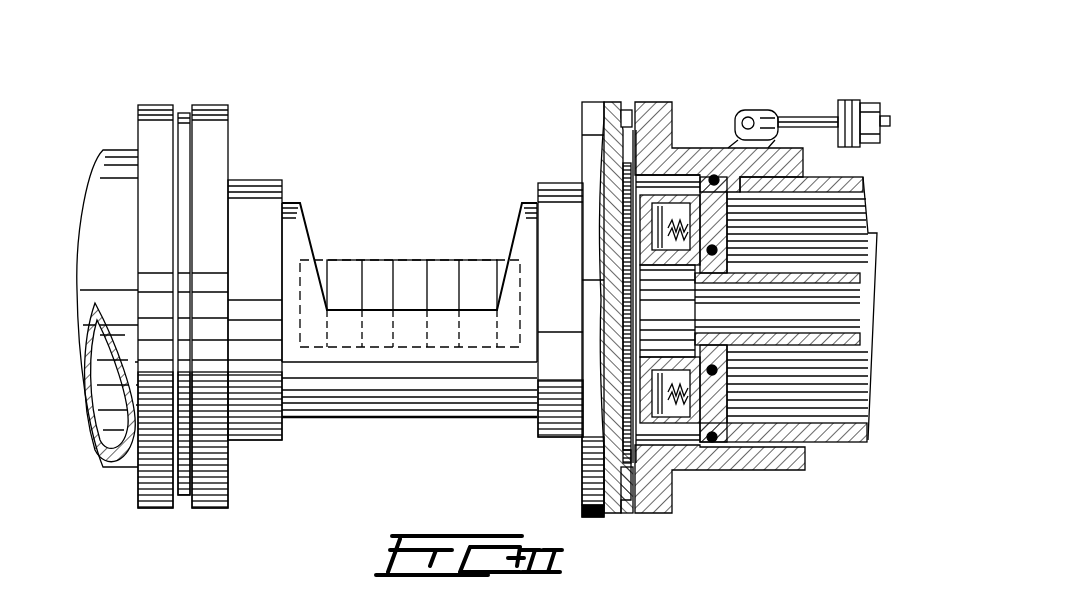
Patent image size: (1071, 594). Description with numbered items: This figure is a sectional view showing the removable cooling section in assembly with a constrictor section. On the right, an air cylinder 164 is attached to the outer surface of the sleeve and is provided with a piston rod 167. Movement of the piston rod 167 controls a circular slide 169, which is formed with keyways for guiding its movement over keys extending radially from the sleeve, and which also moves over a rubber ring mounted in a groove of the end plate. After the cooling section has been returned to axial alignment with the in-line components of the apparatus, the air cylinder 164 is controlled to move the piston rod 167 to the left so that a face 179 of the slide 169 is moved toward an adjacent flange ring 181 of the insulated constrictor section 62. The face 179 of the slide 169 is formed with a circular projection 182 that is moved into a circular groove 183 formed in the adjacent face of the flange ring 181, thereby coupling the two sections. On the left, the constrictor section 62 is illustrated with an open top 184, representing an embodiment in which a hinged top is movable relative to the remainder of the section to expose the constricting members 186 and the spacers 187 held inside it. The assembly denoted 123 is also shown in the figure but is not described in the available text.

The insulated constrictor section 62 is at (258, 178).
The open top 184 is at (310, 232).
The constricting members 186 is at (340, 262).
The spacers 187 is at (376, 278).
The flange ring 181 is at (588, 122).
The circular projection 182 is at (627, 125).
The circular groove 183 is at (628, 110).
The circular slide 169 is at (672, 135).
The piston rod 167 is at (809, 118).
The air cylinder 164 is at (858, 102).
The face of the slide 179 is at (627, 505).
The clutch assembly 123 is at (827, 470).